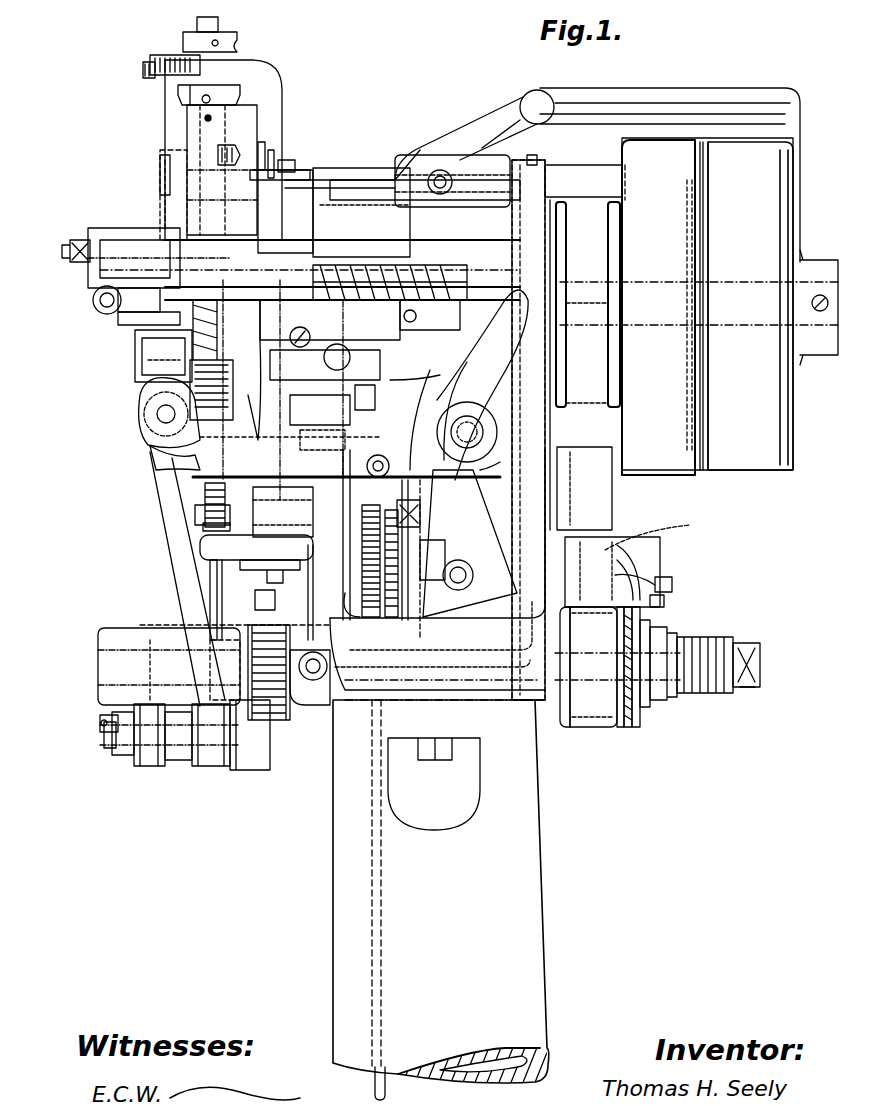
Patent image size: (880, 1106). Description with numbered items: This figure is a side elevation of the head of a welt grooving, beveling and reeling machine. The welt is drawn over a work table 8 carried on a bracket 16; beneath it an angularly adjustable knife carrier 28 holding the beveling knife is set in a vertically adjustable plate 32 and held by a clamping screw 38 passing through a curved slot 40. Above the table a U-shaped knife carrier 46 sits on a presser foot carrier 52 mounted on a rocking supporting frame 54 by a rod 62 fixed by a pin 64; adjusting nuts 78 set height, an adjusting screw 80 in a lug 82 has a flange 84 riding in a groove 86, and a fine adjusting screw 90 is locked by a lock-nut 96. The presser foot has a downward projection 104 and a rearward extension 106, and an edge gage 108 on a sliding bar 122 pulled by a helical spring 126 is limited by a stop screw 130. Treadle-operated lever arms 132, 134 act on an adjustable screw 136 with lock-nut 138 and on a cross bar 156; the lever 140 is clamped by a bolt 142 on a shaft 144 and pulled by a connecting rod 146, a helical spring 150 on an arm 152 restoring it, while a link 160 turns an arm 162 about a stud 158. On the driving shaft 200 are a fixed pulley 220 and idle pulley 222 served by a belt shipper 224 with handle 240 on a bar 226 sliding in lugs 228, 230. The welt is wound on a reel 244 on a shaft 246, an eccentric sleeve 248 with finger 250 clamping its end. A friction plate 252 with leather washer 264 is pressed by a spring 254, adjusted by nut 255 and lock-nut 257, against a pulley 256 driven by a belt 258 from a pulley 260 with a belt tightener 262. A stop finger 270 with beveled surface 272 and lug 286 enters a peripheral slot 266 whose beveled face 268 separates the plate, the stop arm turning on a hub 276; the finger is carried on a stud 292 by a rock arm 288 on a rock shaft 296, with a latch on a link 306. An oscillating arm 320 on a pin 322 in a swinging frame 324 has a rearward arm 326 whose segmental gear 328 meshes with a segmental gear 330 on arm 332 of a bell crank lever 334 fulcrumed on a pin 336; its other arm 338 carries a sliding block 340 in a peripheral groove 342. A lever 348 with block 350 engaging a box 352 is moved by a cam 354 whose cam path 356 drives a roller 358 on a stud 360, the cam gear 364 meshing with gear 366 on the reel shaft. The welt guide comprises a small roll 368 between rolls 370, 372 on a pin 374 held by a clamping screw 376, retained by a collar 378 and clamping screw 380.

The work table 8 is at (310, 270).
The bracket 16 is at (282, 250).
The knife carrier 28 is at (94, 302).
The vertically adjustable plate 32 is at (136, 362).
The clamping screw 38 is at (142, 322).
The curved slot 40 is at (122, 308).
The knife carrier 46 is at (268, 62).
The presser foot carrier 52 is at (243, 110).
The rocking supporting frame 54 is at (158, 448).
The rod 62 is at (198, 140).
The pin 64 is at (204, 118).
The adjusting nuts 78 is at (237, 36).
The adjusting screw 80 is at (290, 168).
The lug 82 is at (238, 148).
The peripheral flange 84 is at (272, 165).
The groove 86 is at (263, 160).
The adjusting screw 90 is at (183, 62).
The lock-nut 96 is at (150, 78).
The downward projection 104 is at (175, 262).
The rearward extension 106 is at (195, 232).
The edge gage 108 is at (392, 620).
The sliding bar 122 is at (340, 262).
The helical spring 126 is at (384, 262).
The stop screw 130 is at (78, 240).
The lever arm 132 is at (200, 550).
The lever arm 134 is at (530, 388).
The adjustable screw 136 is at (205, 535).
The lock-nut 138 is at (205, 515).
The lever 140 is at (266, 574).
The clamping bolt 142 is at (268, 592).
The shaft 144 is at (256, 587).
The connecting rod 146 is at (380, 895).
The helical spring 150 is at (306, 708).
The arm 152 is at (312, 700).
The cross bar 156 is at (498, 285).
The stud 158 is at (470, 432).
The link 160 is at (368, 460).
The arm 162 is at (410, 420).
The driving shaft 200 is at (652, 296).
The fixed pulley 220 is at (684, 476).
The idle pulley 222 is at (763, 470).
The belt shipper 224 is at (582, 92).
The bar 226 is at (372, 172).
The lug 228 is at (352, 172).
The lug 230 is at (540, 190).
The handle 240 is at (537, 107).
The reel 244 is at (110, 638).
The shaft 246 is at (150, 642).
The eccentric sleeve 248 is at (276, 626).
The finger 250 is at (208, 668).
The friction plate 252 is at (628, 728).
The spring 254 is at (672, 698).
The adjusting nut 255 is at (744, 688).
The pulley 256 is at (614, 728).
The lock-nut 257 is at (760, 665).
The belt 258 is at (622, 440).
The pulley 260 is at (612, 200).
The belt tightener 262 is at (618, 537).
The leather friction washer 264 is at (620, 728).
The peripheral slot 266 is at (636, 728).
The beveled rear face 268 is at (645, 708).
The stop finger 270 is at (668, 578).
The beveled surface 272 is at (664, 600).
The hub 276 is at (700, 640).
The lug 286 is at (660, 582).
The rock arm 288 is at (640, 562).
The stud 292 is at (700, 530).
The rock shaft 296 is at (530, 625).
The link 306 is at (340, 440).
The oscillating arm 320 is at (182, 586).
The pin 322 is at (158, 414).
The swinging frame 324 is at (148, 405).
The rearwardly extending arm 326 is at (190, 460).
The segmental gear 328 is at (226, 456).
The segmental gear 330 is at (273, 446).
The arm 332 is at (298, 390).
The bell crank lever 334 is at (360, 398).
The pin 336 is at (345, 410).
The arm 338 is at (341, 357).
The sliding block 340 is at (330, 338).
The peripheral groove 342 is at (400, 270).
The lever 348 is at (412, 382).
The block 350 is at (440, 320).
The box 352 is at (497, 386).
The cam 354 is at (520, 522).
The peripheral cam path 356 is at (466, 590).
The roller 358 is at (457, 543).
The stud 360 is at (400, 618).
The gear 364 is at (395, 640).
The gear 366 is at (404, 748).
The small roll 368 is at (178, 755).
The roll 370 is at (148, 760).
The roll 372 is at (214, 760).
The pin 374 is at (104, 742).
The clamping screw 376 is at (260, 762).
The collar 378 is at (118, 760).
The clamping screw 380 is at (104, 724).